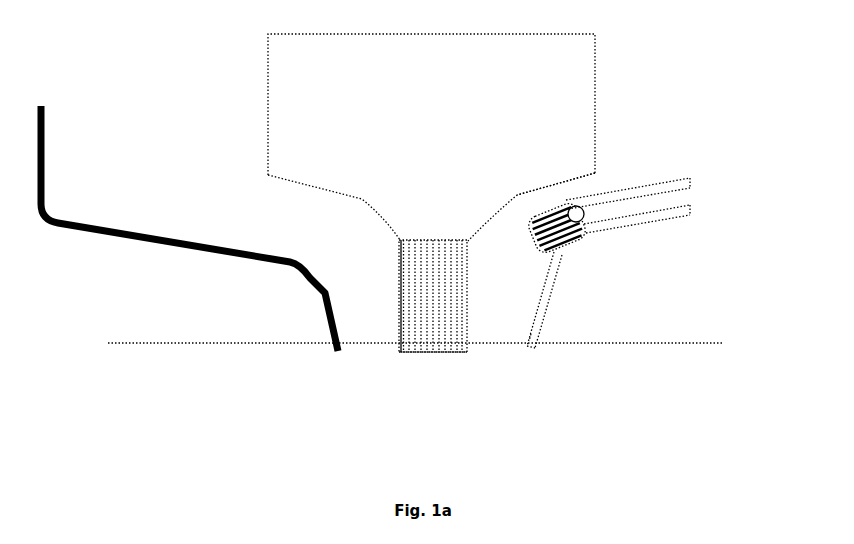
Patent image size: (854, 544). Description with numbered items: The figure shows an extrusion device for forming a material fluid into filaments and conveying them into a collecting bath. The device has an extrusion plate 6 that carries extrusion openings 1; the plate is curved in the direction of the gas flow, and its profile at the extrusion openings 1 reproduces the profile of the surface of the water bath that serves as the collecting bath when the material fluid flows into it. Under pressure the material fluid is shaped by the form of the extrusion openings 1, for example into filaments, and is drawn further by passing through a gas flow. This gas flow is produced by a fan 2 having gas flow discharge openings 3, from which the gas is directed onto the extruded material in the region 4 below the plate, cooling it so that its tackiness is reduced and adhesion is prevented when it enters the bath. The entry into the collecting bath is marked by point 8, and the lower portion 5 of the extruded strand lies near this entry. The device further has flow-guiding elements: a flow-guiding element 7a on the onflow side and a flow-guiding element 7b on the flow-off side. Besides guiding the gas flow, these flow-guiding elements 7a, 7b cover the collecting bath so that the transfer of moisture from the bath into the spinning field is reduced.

The extrusion openings 1 is at (416, 235).
The fan 2 is at (688, 197).
The gas flow discharge openings 3 is at (564, 248).
The hopper outlet 4 is at (515, 211).
The lower end of strip 5 is at (521, 324).
The extrusion plate 6 is at (378, 210).
The flow-guiding element on the onflow side 7a is at (549, 316).
The flow-guiding element on the flow-off side 7b is at (192, 256).
The entry point into collecting bath 8 is at (394, 355).